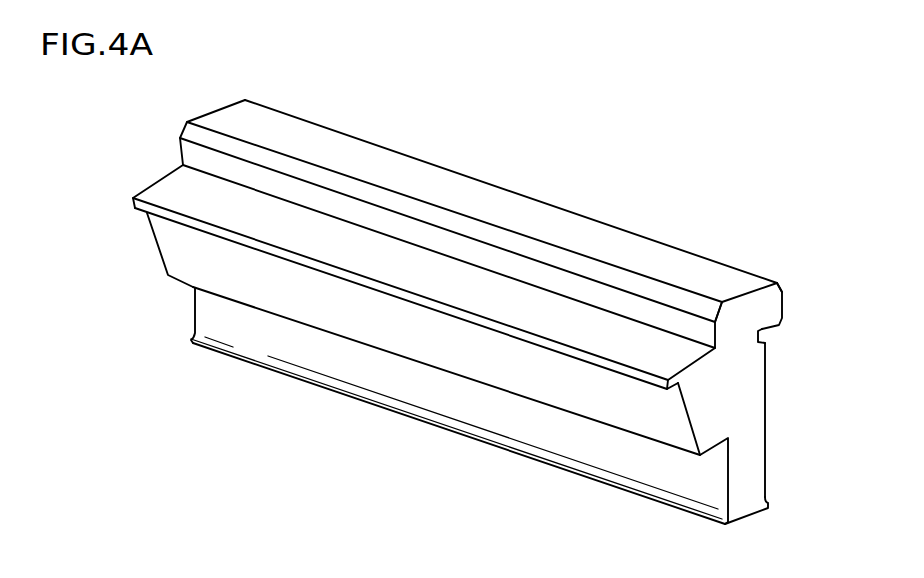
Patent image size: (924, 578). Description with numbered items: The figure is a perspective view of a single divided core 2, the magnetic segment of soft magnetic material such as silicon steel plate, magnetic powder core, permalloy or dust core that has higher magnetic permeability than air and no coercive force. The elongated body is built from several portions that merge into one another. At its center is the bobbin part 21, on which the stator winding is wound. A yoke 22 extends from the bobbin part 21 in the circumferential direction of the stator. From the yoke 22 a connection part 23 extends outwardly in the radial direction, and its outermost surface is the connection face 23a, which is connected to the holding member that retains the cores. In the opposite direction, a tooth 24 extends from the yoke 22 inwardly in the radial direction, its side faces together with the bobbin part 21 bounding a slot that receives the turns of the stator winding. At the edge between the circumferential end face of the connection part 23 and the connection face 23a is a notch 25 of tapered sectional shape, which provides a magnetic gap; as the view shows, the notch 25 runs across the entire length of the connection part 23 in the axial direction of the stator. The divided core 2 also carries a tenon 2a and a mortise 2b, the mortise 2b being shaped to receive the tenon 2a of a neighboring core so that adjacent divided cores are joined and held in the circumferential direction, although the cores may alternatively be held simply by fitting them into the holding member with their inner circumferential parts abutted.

The divided core 2 is at (369, 140).
The tenon 2a is at (630, 372).
The mortise 2b is at (768, 332).
The bobbin part 21 is at (698, 408).
The yoke 22 is at (768, 410).
The connection part 23 is at (761, 310).
The connection face 23a is at (630, 245).
The tooth 24 is at (768, 472).
The notch 25 is at (702, 308).